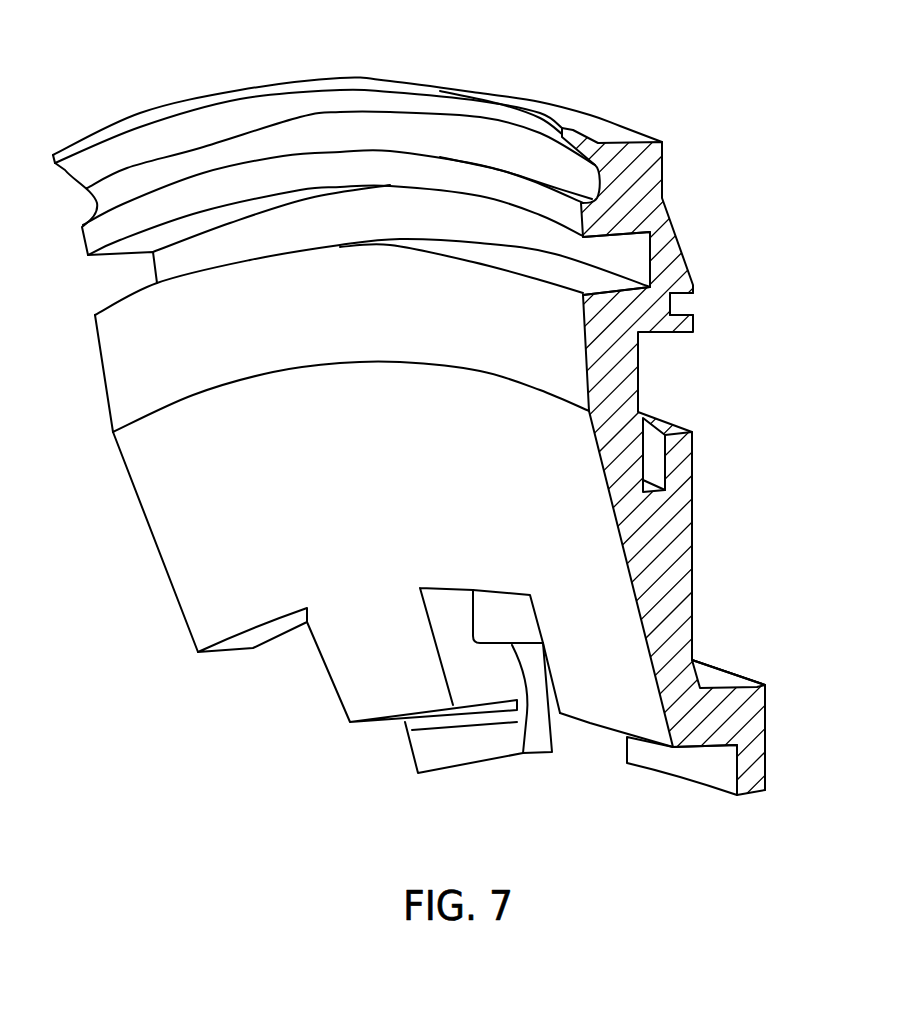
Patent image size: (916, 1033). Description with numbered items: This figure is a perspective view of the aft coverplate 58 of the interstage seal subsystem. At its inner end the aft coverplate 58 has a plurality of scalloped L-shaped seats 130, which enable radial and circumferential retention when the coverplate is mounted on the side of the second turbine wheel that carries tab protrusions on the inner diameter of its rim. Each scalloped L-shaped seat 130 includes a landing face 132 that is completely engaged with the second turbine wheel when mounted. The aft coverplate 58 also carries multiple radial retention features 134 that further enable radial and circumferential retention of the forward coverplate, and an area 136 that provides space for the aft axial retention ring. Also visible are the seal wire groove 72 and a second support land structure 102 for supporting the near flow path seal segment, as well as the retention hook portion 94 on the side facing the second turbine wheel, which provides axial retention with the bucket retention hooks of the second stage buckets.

The aft coverplate 58 is at (458, 516).
The second support land structure 102 is at (585, 238).
The seal wire groove 72 is at (683, 303).
The retention hook portion 94 is at (680, 455).
The landing face 132 is at (720, 670).
The area 136 is at (705, 765).
The scalloped L-shaped seat 130 is at (373, 760).
The radial retention feature 134 is at (440, 707).